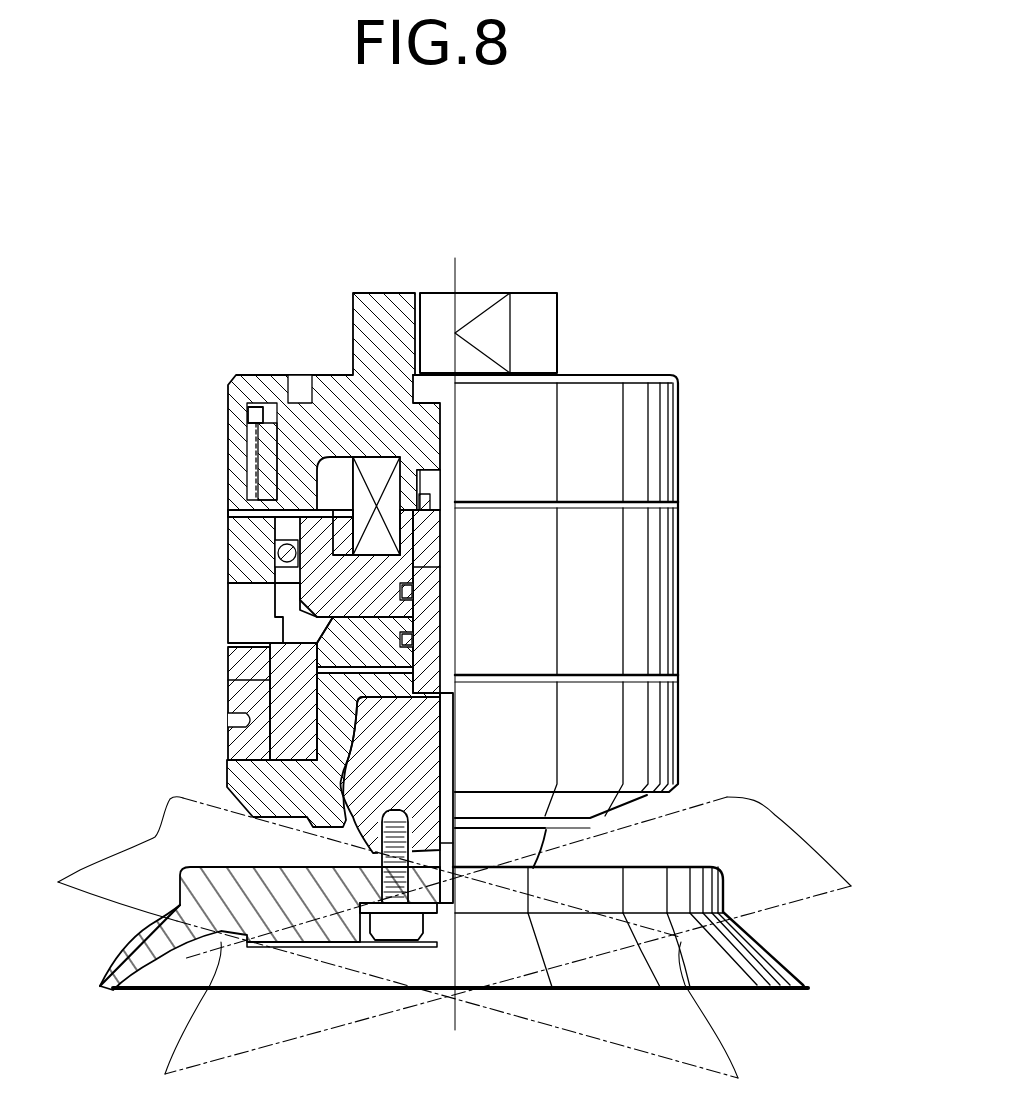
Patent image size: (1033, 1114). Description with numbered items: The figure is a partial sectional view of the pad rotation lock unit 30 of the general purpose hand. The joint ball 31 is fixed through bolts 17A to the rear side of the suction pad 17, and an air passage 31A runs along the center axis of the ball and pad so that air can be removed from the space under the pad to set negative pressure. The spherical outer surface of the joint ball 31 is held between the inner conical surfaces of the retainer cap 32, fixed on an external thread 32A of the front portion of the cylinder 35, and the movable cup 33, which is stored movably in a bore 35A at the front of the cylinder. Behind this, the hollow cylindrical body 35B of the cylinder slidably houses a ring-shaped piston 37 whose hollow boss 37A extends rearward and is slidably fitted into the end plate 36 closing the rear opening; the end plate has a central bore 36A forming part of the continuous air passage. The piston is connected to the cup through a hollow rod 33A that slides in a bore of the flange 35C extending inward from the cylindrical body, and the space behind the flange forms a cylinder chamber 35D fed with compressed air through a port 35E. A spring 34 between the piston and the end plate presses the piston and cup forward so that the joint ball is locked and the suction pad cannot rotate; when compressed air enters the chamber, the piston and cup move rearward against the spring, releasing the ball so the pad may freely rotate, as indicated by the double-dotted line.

The pad rotation lock unit 30 is at (668, 201).
The end plate 36 is at (344, 412).
The bore 36A is at (448, 432).
The spring 34 is at (290, 465).
The cylinder 35 is at (82, 512).
The bore 35A is at (330, 737).
The hollow cylindrical body 35B is at (232, 533).
The flange 35C is at (268, 652).
The cylinder chamber 35D is at (283, 607).
The port 35E is at (247, 628).
The ring-shaped piston 37 is at (386, 565).
The hollow boss 37A is at (425, 525).
The movable cup 33 is at (430, 667).
The hollow rod 33A is at (425, 593).
The joint ball 31 is at (412, 738).
The air passage 31A is at (447, 757).
The retainer cap 32 is at (372, 858).
The external thread 32A is at (222, 742).
The suction pad 17 is at (773, 953).
The bolts 17A is at (400, 922).